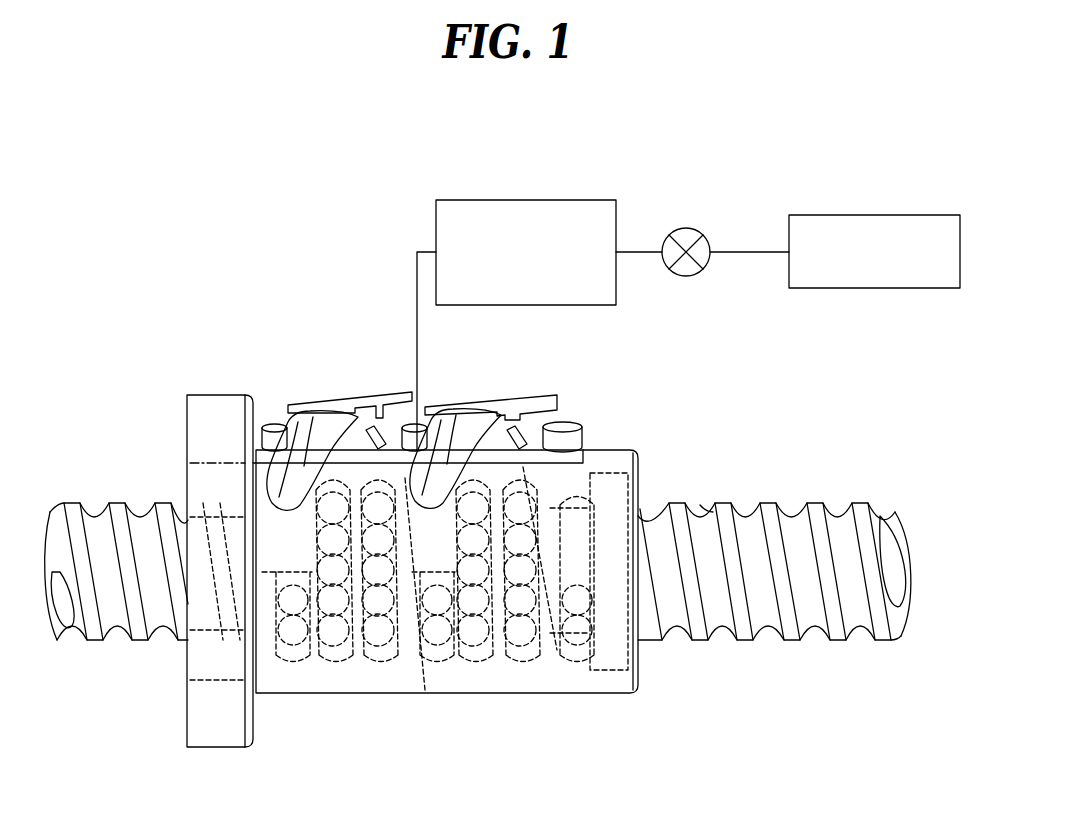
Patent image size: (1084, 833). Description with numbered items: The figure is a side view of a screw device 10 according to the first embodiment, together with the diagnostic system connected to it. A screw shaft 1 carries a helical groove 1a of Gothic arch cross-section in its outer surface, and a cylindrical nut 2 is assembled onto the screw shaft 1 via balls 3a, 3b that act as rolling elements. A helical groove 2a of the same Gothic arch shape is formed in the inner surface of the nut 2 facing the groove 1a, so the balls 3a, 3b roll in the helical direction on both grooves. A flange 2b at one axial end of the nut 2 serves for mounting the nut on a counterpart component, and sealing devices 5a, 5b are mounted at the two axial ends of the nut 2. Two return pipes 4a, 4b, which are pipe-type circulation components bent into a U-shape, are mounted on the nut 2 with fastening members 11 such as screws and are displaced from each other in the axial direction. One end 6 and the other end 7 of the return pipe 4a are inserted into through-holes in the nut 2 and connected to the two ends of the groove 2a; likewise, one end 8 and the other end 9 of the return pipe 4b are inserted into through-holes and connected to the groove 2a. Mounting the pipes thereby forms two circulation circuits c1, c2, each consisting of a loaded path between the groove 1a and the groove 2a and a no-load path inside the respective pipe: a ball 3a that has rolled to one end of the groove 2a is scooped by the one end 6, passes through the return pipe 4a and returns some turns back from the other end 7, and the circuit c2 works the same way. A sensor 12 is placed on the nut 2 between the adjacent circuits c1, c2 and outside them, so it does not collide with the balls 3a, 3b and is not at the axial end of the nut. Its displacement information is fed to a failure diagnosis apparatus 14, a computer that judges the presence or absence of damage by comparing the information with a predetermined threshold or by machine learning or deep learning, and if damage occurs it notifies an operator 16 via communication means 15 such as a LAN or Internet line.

The screw shaft 1 is at (772, 502).
The helical groove 1a is at (697, 515).
The nut 2 is at (613, 442).
The helical groove 2a is at (550, 647).
The flange 2b is at (215, 410).
The balls 3a is at (344, 603).
The balls 3b is at (490, 628).
The return pipe 4a is at (343, 400).
The return pipe 4b is at (507, 403).
The sealing device 5a is at (202, 662).
The sealing device 5b is at (637, 658).
The one end of circulation component 6 is at (283, 533).
The other end of circulation component 7 is at (393, 477).
The one end of circulation component 8 is at (437, 530).
The other end of circulation component 9 is at (558, 487).
The screw device 10 is at (386, 132).
The fastening members 11 is at (270, 423).
The sensor 12 is at (403, 478).
The circulation circuit c1 is at (363, 657).
The circulation circuit c2 is at (502, 653).
The failure diagnosis apparatus 14 is at (540, 200).
The communication means 15 is at (692, 226).
The operator 16 is at (867, 215).